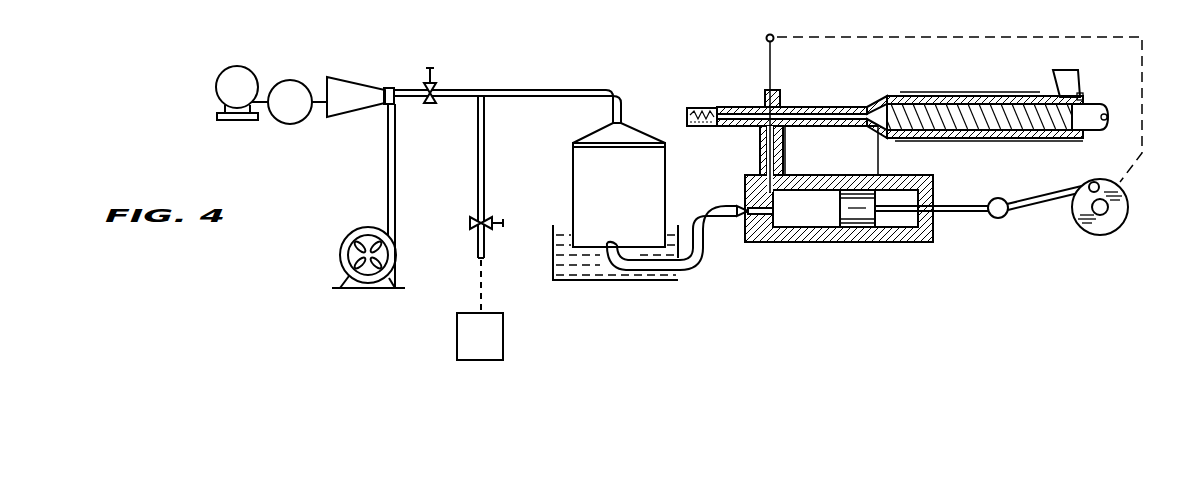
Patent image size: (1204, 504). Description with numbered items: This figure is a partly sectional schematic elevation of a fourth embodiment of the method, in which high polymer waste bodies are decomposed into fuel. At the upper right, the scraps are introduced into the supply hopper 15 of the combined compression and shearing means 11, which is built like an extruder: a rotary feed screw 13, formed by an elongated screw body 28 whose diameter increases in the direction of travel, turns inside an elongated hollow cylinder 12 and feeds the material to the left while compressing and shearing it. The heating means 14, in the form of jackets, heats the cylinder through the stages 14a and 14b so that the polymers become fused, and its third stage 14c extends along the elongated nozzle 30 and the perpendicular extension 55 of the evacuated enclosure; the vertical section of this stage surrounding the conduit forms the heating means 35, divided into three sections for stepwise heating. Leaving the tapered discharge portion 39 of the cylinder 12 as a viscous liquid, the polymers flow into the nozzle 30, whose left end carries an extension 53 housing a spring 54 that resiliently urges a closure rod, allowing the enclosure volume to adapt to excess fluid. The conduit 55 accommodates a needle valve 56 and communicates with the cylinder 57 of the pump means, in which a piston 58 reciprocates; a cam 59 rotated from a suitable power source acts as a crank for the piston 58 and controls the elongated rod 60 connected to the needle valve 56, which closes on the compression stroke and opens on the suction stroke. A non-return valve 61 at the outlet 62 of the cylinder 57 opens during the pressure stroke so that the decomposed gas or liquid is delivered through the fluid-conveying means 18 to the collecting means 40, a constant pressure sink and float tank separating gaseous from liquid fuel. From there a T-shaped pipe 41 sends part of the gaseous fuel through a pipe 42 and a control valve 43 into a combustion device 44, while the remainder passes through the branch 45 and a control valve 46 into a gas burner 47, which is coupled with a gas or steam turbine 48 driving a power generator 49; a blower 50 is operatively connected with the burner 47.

The combined compression and shearing means 11 is at (1052, 69).
The elongated hollow cylinder 12 is at (978, 96).
The rotary feed screw 13 is at (963, 112).
The heating means 14 is at (1057, 142).
The heating stage 14a is at (1015, 143).
The heating stage 14b is at (947, 142).
The third heating stage 14c is at (798, 106).
The supply hopper 15 is at (1070, 80).
The fluid-conveying means 18 is at (712, 207).
The elongated screw body 28 is at (922, 108).
The elongated nozzle 30 is at (825, 130).
The heating means 35 is at (761, 156).
The tapered discharge portion 39 is at (868, 130).
The collecting means 40 is at (575, 192).
The T-shaped pipe 41 is at (560, 72).
The pipe 42 is at (485, 172).
The control valve 43 is at (488, 222).
The combustion device 44 is at (503, 333).
The branch 45 is at (462, 90).
The control valve 46 is at (430, 103).
The gas burner 47 is at (373, 71).
The gas or steam turbine 48 is at (298, 81).
The power generator 49 is at (252, 72).
The blower 50 is at (350, 245).
The extension 53 is at (690, 108).
The spring 54 is at (700, 127).
The perpendicular extension 55 is at (760, 167).
The needle valve 56 is at (775, 192).
The cylinder 57 is at (823, 235).
The piston 58 is at (863, 225).
The cam 59 is at (1128, 203).
The elongated rod 60 is at (768, 63).
The non-return valve 61 is at (737, 217).
The outlet 62 is at (758, 242).